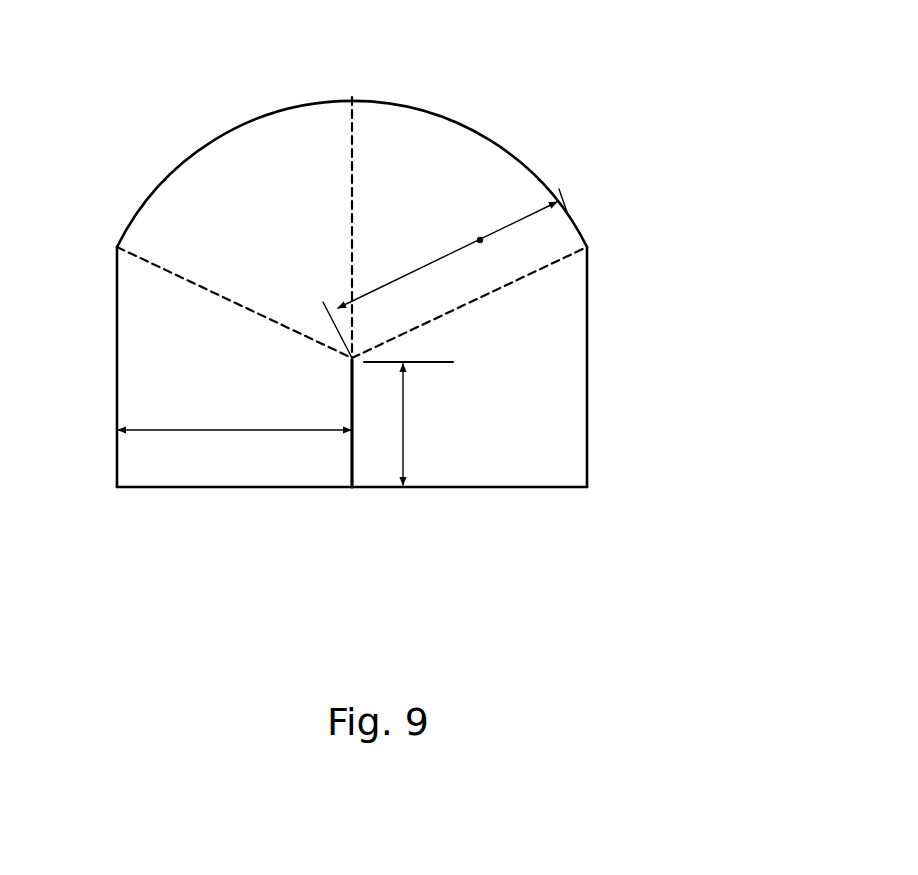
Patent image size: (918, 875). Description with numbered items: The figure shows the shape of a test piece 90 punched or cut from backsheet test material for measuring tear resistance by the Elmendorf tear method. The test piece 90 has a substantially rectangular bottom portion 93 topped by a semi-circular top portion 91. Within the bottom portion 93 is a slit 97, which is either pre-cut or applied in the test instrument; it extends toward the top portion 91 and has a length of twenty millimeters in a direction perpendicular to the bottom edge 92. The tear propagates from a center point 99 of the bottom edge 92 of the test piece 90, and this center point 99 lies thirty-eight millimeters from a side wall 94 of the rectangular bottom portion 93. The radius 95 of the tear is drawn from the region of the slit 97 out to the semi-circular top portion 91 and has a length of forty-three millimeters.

The test piece 90 is at (624, 138).
The semi-circular top portion 91 is at (193, 176).
The bottom edge 92 is at (537, 488).
The rectangular bottom portion 93 is at (570, 362).
The side wall 94 is at (116, 363).
The radius of a tear 95 is at (480, 240).
The slit 97 is at (345, 453).
The center point 99 is at (360, 488).